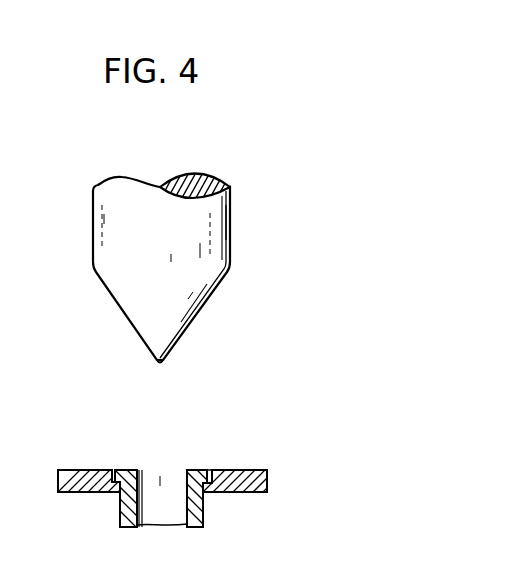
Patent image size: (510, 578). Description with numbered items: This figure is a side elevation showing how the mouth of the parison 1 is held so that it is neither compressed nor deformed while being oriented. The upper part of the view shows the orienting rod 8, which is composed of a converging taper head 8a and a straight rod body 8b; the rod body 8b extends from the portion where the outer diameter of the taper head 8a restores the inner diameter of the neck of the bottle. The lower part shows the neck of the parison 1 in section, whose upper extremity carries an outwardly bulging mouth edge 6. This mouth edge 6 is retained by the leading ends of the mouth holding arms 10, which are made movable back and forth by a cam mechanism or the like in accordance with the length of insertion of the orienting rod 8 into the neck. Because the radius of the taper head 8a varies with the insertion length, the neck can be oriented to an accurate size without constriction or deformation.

The parison 1 is at (120, 526).
The mouth edge 6 is at (206, 470).
The orienting rod 8 is at (92, 222).
The taper head 8a is at (150, 348).
The rod body 8b is at (218, 227).
The mouth holding arms 10 is at (80, 470).